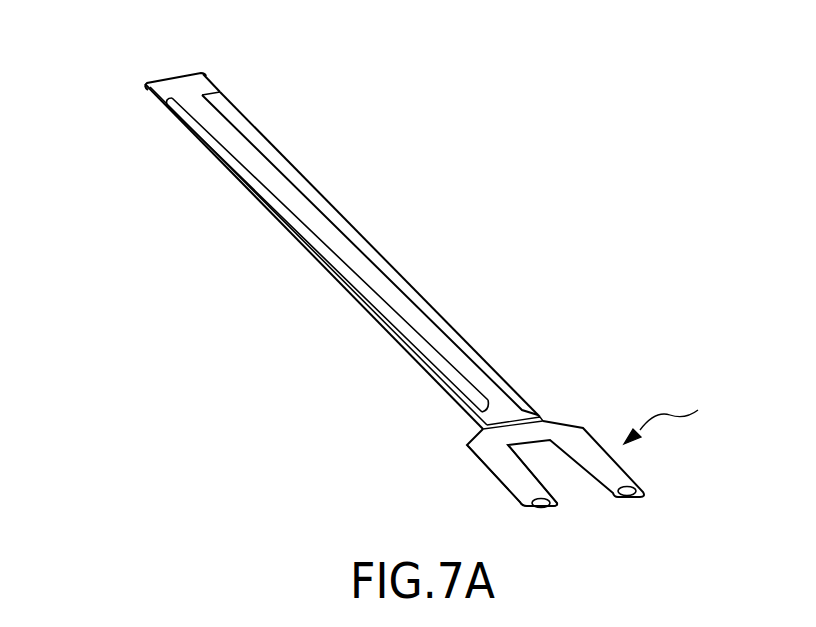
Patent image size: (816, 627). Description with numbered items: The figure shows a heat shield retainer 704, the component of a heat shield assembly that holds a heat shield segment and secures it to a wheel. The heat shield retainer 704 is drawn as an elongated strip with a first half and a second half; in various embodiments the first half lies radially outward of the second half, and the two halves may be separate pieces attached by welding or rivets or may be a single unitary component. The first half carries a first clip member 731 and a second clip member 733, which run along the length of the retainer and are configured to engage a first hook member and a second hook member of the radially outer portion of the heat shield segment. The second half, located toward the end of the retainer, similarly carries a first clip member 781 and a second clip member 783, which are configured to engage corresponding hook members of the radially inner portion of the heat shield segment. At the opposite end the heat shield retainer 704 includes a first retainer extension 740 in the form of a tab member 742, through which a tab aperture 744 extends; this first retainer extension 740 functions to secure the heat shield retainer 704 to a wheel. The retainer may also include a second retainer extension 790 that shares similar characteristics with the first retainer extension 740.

The heat shield retainer 704 is at (373, 253).
The first clip member 731 is at (437, 315).
The second clip member 733 is at (410, 330).
The first retainer extension 740 is at (455, 454).
The tab member 742 is at (505, 476).
The tab aperture 744 is at (543, 508).
The first clip member 781 is at (214, 83).
The second clip member 783 is at (147, 95).
The second retainer extension 790 is at (670, 412).